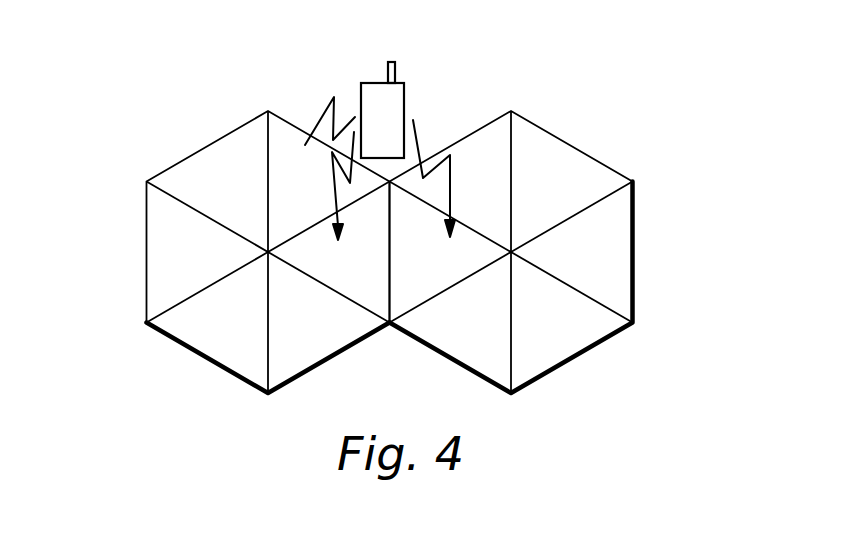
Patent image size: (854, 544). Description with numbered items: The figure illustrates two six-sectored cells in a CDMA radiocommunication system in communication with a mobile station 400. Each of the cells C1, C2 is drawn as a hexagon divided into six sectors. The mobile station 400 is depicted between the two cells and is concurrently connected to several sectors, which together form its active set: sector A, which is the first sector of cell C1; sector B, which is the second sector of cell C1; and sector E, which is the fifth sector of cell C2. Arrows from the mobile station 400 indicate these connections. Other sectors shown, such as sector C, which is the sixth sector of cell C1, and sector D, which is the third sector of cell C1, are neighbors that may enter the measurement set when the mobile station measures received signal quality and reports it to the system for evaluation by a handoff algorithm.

The mobile station 400 is at (404, 104).
The cell C1 is at (180, 133).
The cell C2 is at (615, 143).